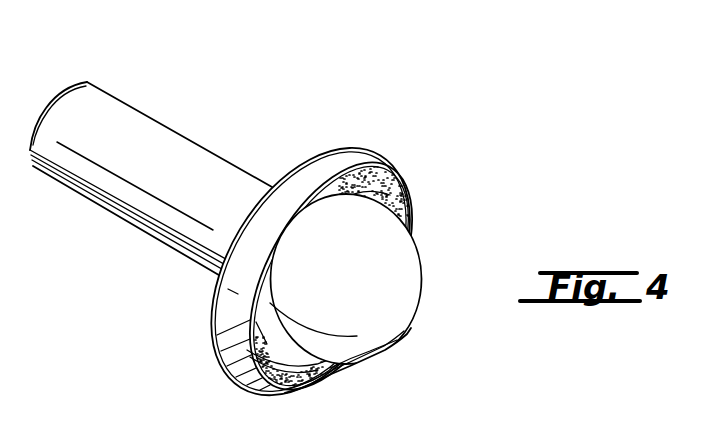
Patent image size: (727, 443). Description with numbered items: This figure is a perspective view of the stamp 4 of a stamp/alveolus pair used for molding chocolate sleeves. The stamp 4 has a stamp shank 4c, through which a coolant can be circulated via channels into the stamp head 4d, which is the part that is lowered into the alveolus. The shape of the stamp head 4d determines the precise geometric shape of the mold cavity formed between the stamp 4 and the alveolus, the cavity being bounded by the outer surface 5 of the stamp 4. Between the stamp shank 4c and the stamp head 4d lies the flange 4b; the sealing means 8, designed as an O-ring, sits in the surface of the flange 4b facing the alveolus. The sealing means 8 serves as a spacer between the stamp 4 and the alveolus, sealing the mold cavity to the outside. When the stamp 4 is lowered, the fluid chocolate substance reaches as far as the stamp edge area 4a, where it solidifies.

The stamp 4 is at (298, 87).
The stamp edge area 4a is at (414, 201).
The flange 4b is at (364, 156).
The stamp shank 4c is at (139, 121).
The stamp head 4d is at (414, 268).
The outer surface 5 is at (415, 322).
The sealing means 8 is at (252, 313).